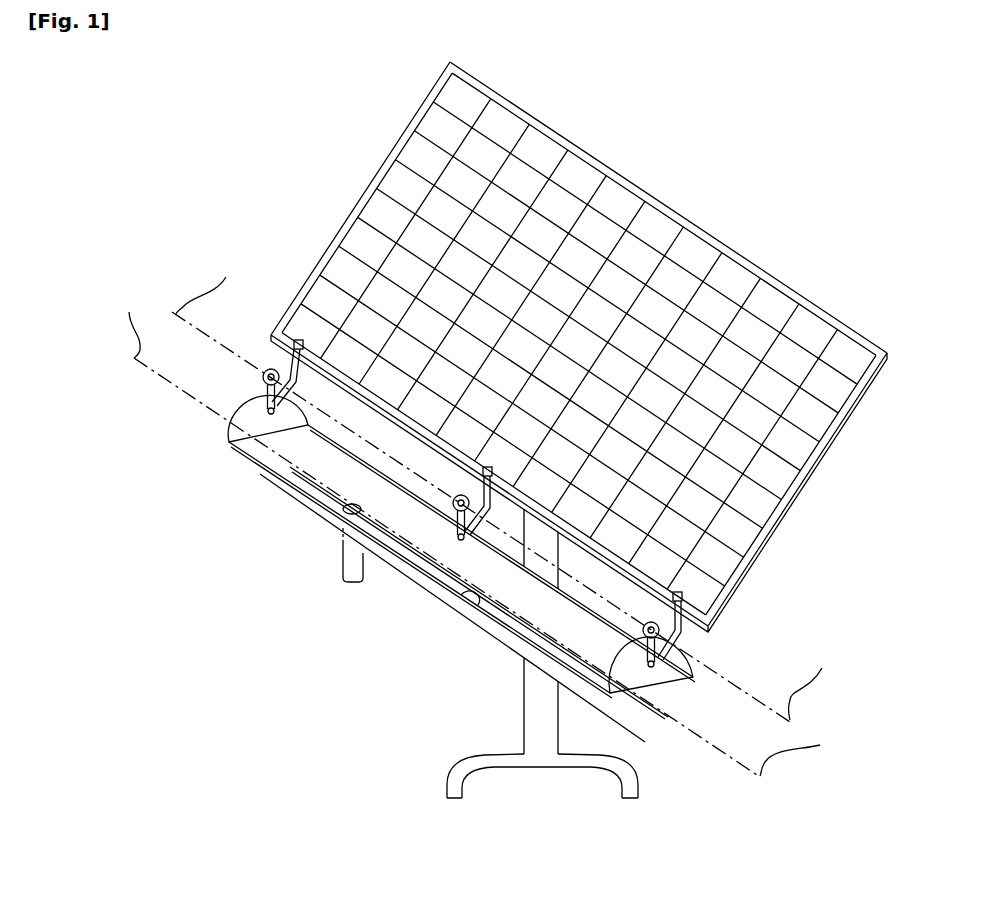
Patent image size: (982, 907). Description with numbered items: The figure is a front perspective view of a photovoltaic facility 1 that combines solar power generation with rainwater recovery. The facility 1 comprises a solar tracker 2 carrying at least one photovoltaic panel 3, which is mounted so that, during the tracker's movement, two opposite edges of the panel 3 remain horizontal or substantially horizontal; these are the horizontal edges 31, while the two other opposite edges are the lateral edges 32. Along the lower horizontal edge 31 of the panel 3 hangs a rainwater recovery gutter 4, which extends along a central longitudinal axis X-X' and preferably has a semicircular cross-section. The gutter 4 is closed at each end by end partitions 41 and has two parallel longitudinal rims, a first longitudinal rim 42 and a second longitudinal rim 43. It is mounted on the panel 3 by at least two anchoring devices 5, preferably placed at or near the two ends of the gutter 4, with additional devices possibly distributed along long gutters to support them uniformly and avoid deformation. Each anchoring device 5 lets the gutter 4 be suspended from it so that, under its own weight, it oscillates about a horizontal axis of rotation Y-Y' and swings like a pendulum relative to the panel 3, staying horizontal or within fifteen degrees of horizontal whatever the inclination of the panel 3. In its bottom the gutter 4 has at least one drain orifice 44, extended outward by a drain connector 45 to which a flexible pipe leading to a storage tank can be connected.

The photovoltaic facility 1 is at (756, 178).
The solar tracker 2 is at (502, 704).
The photovoltaic panel 3 is at (690, 328).
The horizontal edges 31 is at (630, 182).
The lateral edges 32 is at (378, 171).
The rainwater recovery gutter 4 is at (482, 641).
The end partitions 41 is at (290, 457).
The first longitudinal rim 42 is at (470, 597).
The second longitudinal rim 43 is at (578, 594).
The drain orifice 44 is at (352, 498).
The drain connector 45 is at (353, 567).
The anchoring device 5 is at (261, 363).